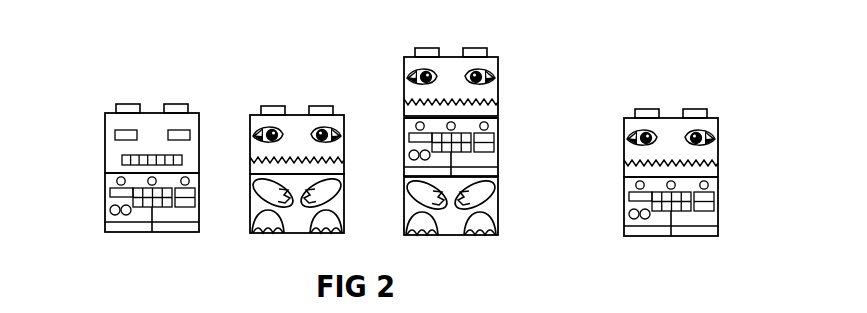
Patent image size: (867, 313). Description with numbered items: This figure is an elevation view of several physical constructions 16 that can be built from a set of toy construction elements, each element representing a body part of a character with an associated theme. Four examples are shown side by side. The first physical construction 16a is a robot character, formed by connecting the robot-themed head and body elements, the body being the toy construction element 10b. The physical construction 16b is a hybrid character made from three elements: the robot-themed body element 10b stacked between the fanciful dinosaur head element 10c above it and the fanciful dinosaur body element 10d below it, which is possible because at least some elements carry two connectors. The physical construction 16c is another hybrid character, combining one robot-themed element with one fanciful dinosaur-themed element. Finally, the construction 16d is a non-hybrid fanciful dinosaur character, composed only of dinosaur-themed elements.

The physical constructions 16 is at (434, 121).
The first physical construction 16a is at (103, 98).
The physical construction 16b is at (514, 62).
The physical construction 16c is at (727, 100).
The construction 16d is at (277, 97).
The toy construction element 10b is at (493, 147).
The toy construction element 10c is at (493, 86).
The toy construction element 10d is at (492, 205).